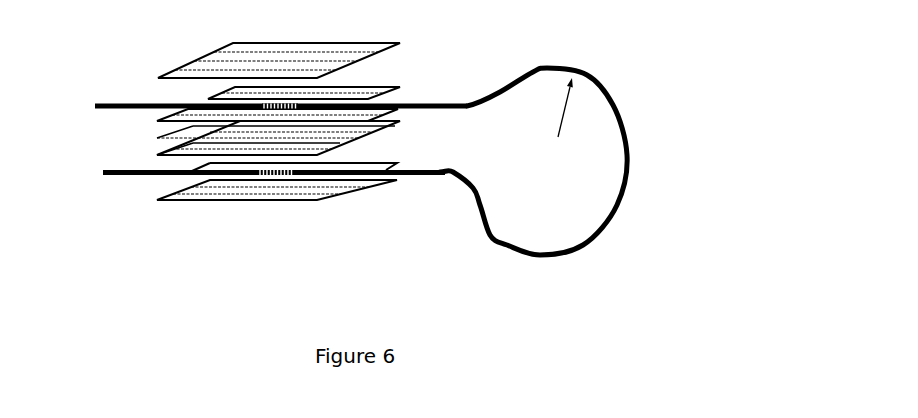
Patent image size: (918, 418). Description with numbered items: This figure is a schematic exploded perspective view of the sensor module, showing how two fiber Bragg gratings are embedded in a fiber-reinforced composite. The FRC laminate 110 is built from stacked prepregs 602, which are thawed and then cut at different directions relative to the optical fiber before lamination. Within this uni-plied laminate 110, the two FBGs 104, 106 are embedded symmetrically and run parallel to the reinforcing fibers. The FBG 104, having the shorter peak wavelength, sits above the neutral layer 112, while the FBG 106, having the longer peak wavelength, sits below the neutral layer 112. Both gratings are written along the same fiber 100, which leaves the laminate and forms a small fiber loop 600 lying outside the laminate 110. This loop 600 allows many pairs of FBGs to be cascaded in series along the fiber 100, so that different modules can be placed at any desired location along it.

The prepreg 602 is at (177, 73).
The FRC laminate 110 is at (428, 68).
The neutral layer 112 is at (160, 143).
The fiber 100 is at (127, 177).
The fiber loop 600 is at (622, 82).
The FBG 104 is at (273, 117).
The FBG 106 is at (285, 184).